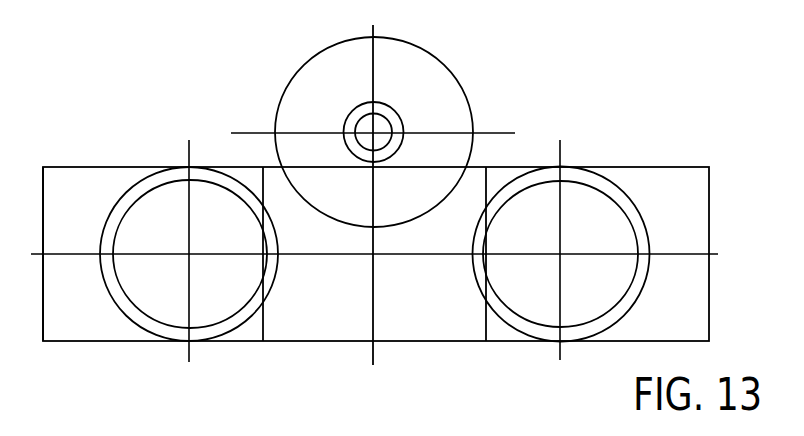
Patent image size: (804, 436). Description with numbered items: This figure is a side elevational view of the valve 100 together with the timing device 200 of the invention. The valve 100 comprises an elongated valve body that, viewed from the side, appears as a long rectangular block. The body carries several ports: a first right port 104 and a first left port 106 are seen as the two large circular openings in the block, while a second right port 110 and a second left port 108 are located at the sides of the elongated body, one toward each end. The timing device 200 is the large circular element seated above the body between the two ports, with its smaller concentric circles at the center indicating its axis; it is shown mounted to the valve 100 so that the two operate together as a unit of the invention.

The valve 100 is at (113, 99).
The first right port 104 is at (172, 176).
The first left port 106 is at (577, 176).
The second left port 108 is at (712, 216).
The second right port 110 is at (43, 172).
The timing device 200 is at (456, 76).